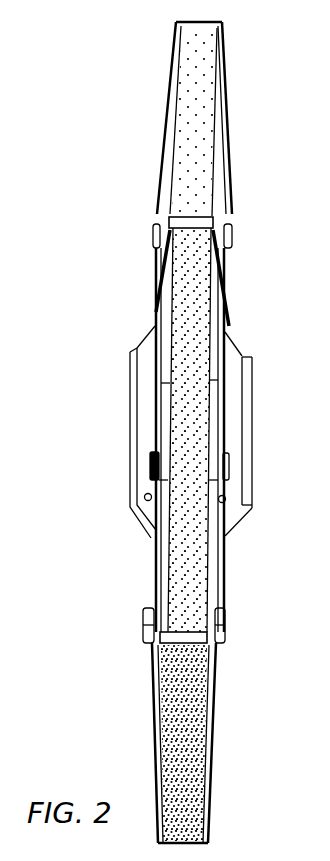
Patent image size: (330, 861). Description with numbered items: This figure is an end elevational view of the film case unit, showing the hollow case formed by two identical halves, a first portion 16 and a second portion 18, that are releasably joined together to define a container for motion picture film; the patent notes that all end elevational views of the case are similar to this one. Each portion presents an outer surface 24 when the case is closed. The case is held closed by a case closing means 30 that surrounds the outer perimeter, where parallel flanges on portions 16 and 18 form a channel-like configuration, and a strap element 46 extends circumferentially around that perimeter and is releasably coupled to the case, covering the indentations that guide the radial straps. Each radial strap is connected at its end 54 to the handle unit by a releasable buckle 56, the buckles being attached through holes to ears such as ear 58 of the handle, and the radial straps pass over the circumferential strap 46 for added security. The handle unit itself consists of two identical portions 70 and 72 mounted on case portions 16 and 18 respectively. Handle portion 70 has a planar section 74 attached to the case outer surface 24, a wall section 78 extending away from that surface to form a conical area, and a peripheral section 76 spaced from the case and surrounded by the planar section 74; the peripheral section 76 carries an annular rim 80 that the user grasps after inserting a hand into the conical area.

The first portion 16 is at (241, 103).
The second portion 18 is at (160, 117).
The outer surface 24 is at (213, 183).
The case closing means 30 is at (199, 136).
The buckle 56 is at (154, 232).
The ear 58 is at (157, 261).
The strap end 54 is at (153, 287).
The handle portion 72 is at (119, 431).
The handle portion 70 is at (238, 343).
The peripheral section 76 is at (252, 358).
The wall section 78 is at (233, 410).
The annular rim 80 is at (247, 503).
The planar section 74 is at (219, 437).
The strap element 46 is at (191, 751).